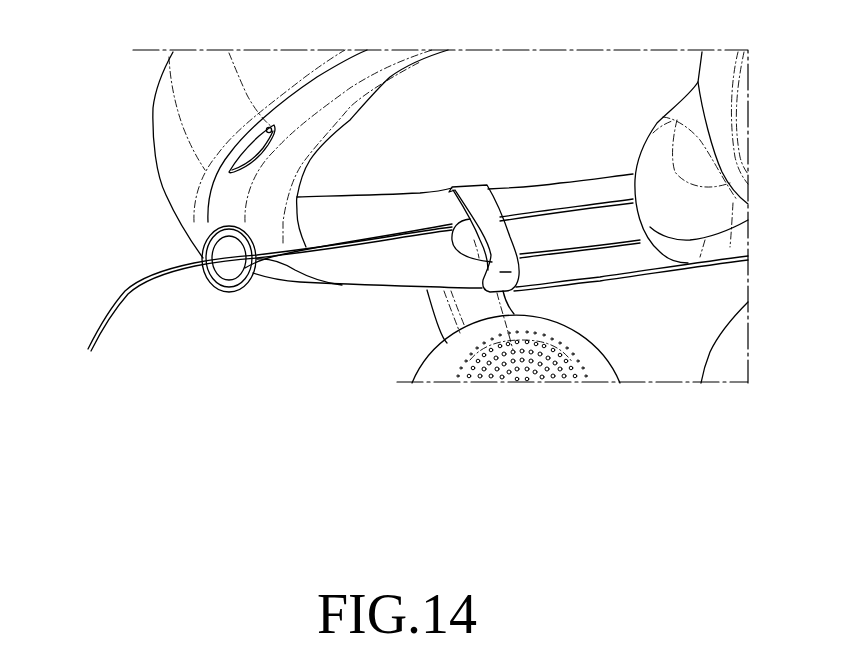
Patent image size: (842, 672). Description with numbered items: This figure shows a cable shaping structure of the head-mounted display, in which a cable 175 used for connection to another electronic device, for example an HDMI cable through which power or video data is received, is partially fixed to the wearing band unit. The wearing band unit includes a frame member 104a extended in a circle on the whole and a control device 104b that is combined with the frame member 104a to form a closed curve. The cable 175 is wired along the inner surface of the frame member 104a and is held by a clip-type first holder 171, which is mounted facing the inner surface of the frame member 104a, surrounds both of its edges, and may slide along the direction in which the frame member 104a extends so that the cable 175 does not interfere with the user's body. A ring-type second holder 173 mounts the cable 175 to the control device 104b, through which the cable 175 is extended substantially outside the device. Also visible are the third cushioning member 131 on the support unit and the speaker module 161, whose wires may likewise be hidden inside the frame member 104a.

The frame member 104a is at (338, 288).
The control device 104b is at (153, 128).
The third cushioning member 131 is at (680, 110).
The speaker module 161 is at (443, 370).
The first holder 171 is at (479, 230).
The second holder 173 is at (200, 256).
The cable 175 is at (112, 317).